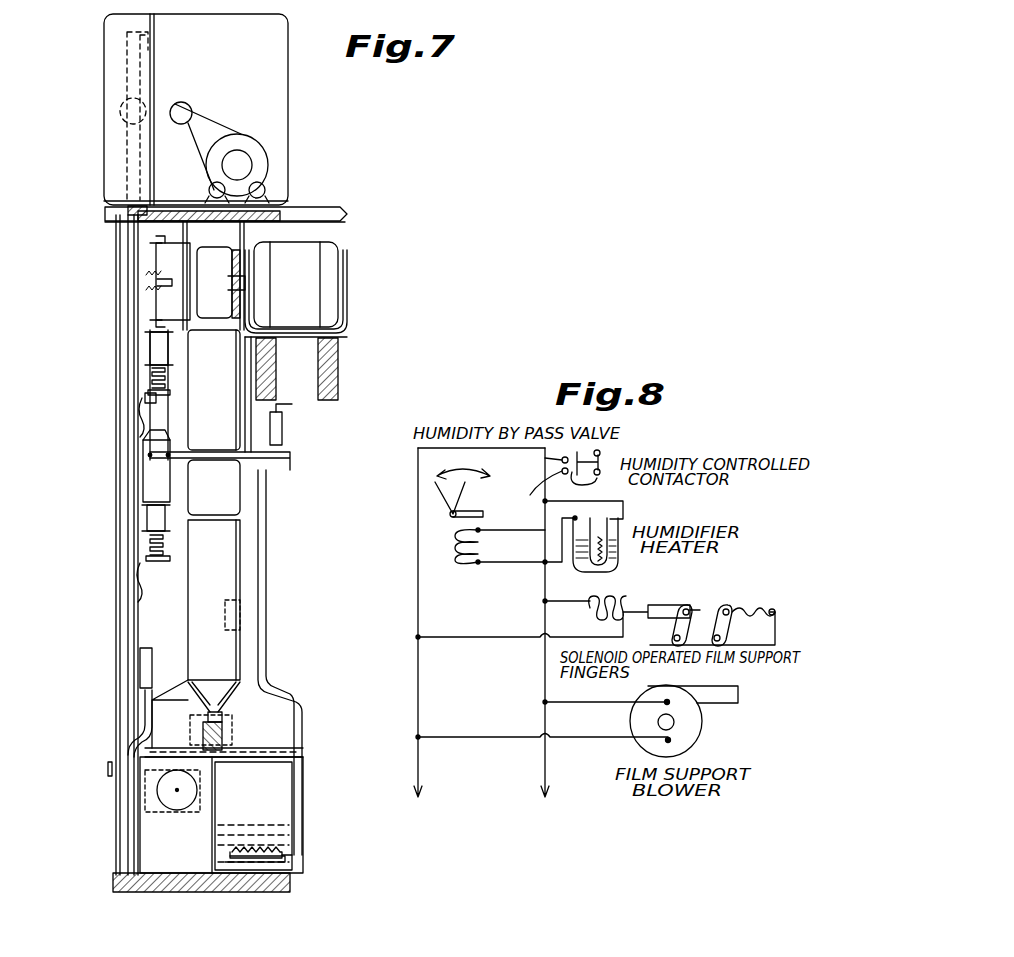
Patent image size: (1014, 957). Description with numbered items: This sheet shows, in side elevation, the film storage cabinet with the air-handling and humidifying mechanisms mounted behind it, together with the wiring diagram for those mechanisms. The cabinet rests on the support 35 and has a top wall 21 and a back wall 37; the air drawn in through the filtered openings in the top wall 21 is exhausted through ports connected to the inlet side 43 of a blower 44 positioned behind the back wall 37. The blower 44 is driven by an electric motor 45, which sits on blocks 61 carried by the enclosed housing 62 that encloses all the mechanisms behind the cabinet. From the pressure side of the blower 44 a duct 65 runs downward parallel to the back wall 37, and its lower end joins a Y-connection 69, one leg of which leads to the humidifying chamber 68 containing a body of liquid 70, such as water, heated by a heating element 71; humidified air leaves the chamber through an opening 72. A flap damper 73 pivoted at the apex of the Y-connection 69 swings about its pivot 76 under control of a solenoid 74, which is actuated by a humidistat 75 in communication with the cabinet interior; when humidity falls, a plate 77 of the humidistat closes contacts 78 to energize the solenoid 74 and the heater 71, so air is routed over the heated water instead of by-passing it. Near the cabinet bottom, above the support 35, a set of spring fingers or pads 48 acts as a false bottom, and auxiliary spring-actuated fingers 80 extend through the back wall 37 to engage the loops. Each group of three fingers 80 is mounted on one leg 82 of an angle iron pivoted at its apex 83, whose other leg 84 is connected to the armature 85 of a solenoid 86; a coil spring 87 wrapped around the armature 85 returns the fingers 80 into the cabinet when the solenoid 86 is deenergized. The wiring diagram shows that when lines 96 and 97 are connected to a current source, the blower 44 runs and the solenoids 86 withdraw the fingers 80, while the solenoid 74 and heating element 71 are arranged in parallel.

In FIG. 7, the top wall 21 is at (128, 212).
In FIG. 7, the support 35 is at (292, 882).
In FIG. 7, the back wall 37 is at (135, 612).
In FIG. 7, the inlet side 43 is at (148, 300).
In FIG. 7, the blower 44 is at (243, 255).
In FIG. 8, the blower 44 is at (703, 728).
In FIG. 7, the electric motor 45 is at (296, 321).
In FIG. 7, the spring fingers or pads 48 is at (135, 740).
In FIG. 7, the blocks 61 is at (338, 395).
In FIG. 7, the enclosed housing 62 is at (288, 215).
In FIG. 7, the duct 65 is at (214, 487).
In FIG. 7, the humidifying chamber 68 is at (253, 816).
In FIG. 8, the humidifying chamber 68 is at (615, 568).
In FIG. 7, the Y-connection 69 is at (270, 705).
In FIG. 7, the body of liquid 70 is at (280, 858).
In FIG. 8, the body of liquid 70 is at (580, 565).
In FIG. 7, the heating element 71 is at (228, 850).
In FIG. 8, the heating element 71 is at (607, 530).
In FIG. 7, the opening 72 is at (192, 806).
In FIG. 7, the flap damper 73 is at (258, 680).
In FIG. 8, the flap damper 73 is at (462, 505).
In FIG. 8, the solenoid or relay 74 is at (455, 545).
In FIG. 7, the humidistat 75 is at (145, 666).
In FIG. 7, the pivot 76 is at (270, 738).
In FIG. 8, the pivot 76 is at (452, 514).
In FIG. 8, the plate 77 is at (598, 475).
In FIG. 8, the contacts 78 is at (540, 487).
In FIG. 7, the spring-actuated fingers 80 is at (138, 417).
In FIG. 7, the leg of angle iron 82 is at (140, 410).
In FIG. 7, the apex 83 is at (150, 395).
In FIG. 7, the other leg of angle iron 84 is at (165, 395).
In FIG. 7, the armature 85 is at (165, 367).
In FIG. 7, the solenoid 86 is at (150, 345).
In FIG. 7, the coil spring 87 is at (165, 380).
In FIG. 8, the line 96 is at (418, 780).
In FIG. 8, the line 97 is at (545, 780).